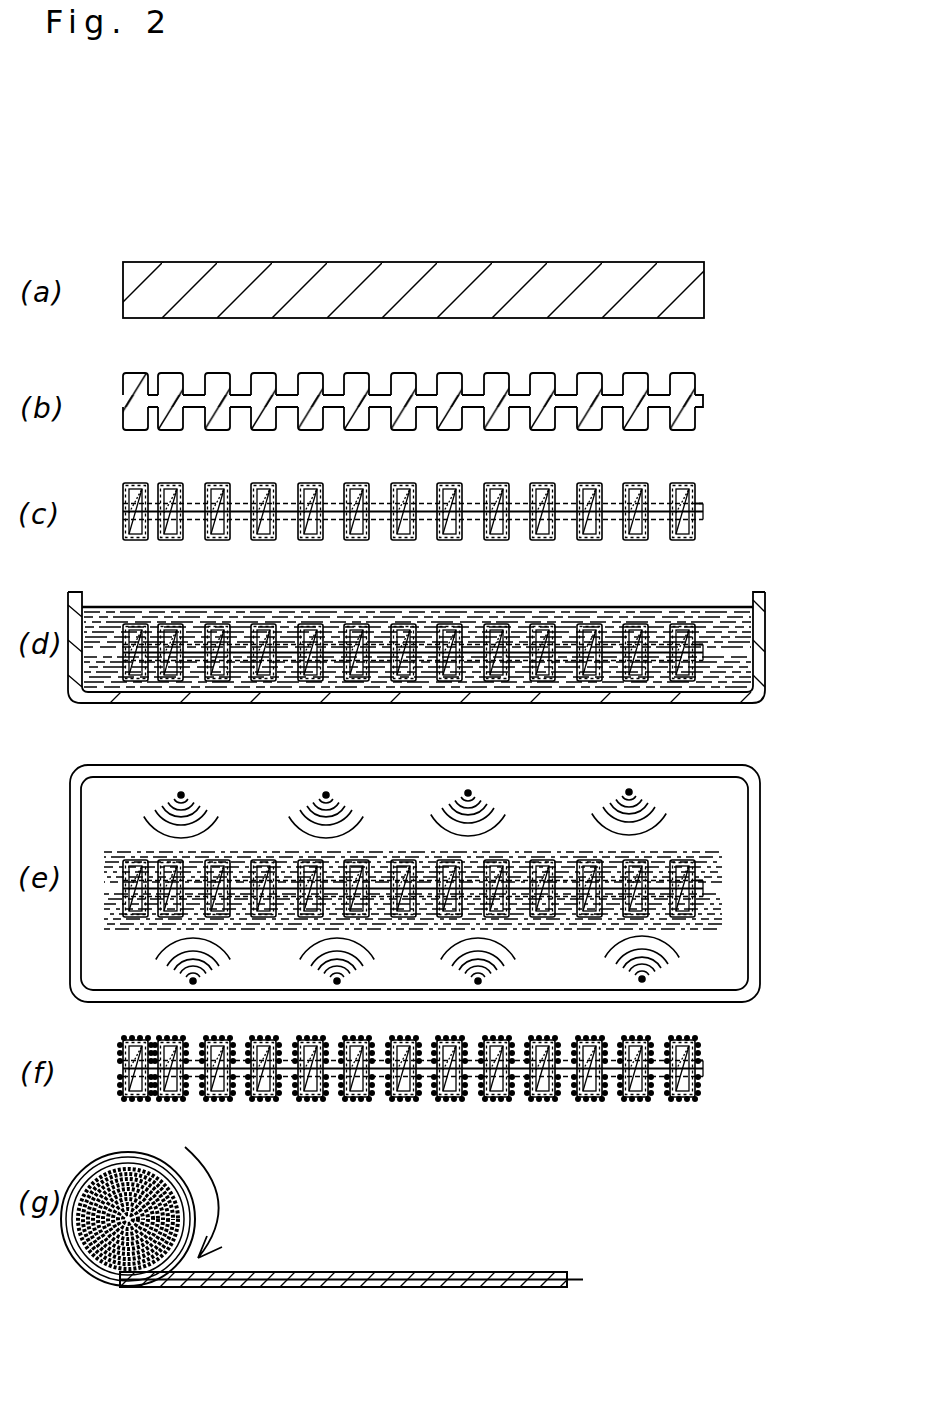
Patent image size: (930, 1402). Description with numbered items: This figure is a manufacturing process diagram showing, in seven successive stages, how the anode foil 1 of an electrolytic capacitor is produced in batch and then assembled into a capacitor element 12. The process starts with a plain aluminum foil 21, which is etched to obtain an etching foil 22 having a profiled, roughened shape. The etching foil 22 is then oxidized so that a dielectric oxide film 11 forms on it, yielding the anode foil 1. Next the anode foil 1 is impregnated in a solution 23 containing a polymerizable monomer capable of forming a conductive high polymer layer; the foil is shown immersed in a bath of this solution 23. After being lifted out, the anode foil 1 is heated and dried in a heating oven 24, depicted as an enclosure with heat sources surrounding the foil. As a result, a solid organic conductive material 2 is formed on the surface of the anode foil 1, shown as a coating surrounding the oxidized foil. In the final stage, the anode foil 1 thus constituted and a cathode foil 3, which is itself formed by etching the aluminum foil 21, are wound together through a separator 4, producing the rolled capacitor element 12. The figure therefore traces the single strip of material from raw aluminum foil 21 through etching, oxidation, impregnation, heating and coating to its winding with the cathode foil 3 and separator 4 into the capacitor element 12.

The anode foil 1 is at (480, 852).
The solid organic conductive material 2 is at (696, 1100).
The cathode foil 3 is at (455, 1272).
The separator 4 is at (577, 1272).
The dielectric oxide film 11 is at (695, 525).
The capacitor element 12 is at (188, 1190).
The aluminum foil 21 is at (683, 288).
The etching foil 22 is at (668, 412).
The solution 23 is at (473, 607).
The heating oven 24 is at (703, 763).